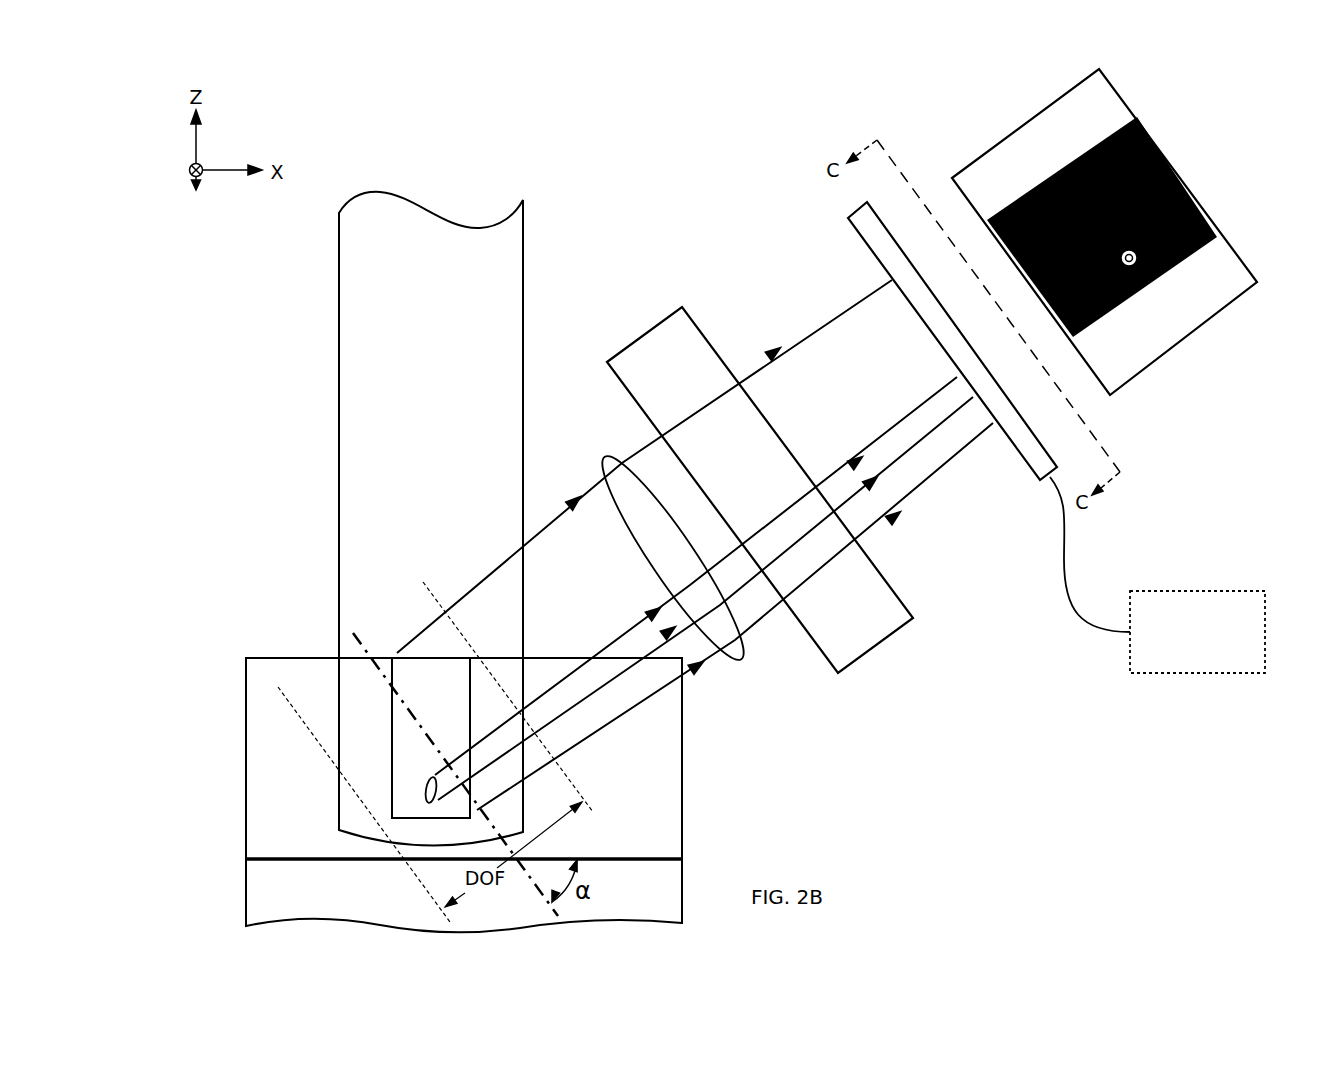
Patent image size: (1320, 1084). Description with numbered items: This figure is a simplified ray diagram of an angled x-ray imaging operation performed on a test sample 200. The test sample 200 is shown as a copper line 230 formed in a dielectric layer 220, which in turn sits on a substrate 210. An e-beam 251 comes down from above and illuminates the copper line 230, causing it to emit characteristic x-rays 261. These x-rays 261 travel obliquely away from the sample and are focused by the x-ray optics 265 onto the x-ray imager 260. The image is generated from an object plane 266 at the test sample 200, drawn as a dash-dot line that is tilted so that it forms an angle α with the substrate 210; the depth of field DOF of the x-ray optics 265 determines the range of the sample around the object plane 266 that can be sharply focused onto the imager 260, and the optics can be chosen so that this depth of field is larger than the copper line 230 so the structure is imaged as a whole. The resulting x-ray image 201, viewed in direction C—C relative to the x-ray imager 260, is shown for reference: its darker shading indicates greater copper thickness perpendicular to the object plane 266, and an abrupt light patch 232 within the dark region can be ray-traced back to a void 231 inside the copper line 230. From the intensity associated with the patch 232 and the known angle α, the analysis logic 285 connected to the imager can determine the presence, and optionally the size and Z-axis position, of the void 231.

The test sample 200 is at (428, 794).
The substrate 210 is at (624, 916).
The dielectric layer 220 is at (624, 841).
The copper line 230 is at (392, 706).
The void 231 is at (426, 790).
The light patch 232 is at (1140, 258).
The e-beam 251 is at (339, 400).
The x-ray imager 260 is at (867, 250).
The characteristic x-rays 261 is at (742, 660).
The x-ray optics 265 is at (694, 318).
The object plane 266 is at (360, 632).
The x-ray image 201 is at (1123, 281).
The analysis logic 285 is at (1180, 670).